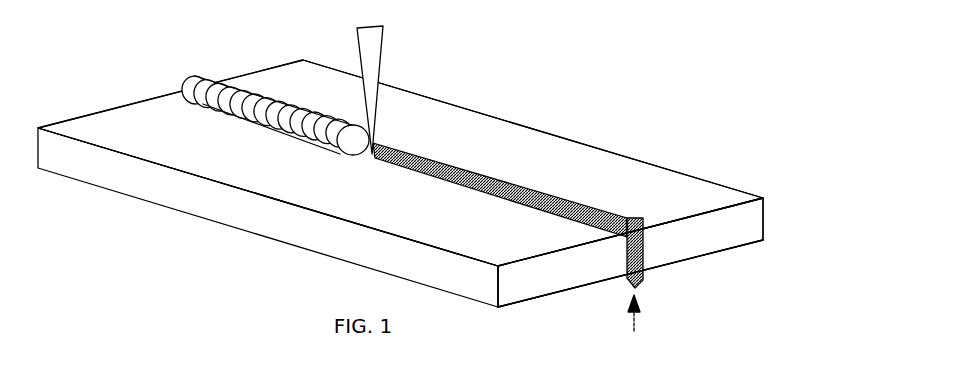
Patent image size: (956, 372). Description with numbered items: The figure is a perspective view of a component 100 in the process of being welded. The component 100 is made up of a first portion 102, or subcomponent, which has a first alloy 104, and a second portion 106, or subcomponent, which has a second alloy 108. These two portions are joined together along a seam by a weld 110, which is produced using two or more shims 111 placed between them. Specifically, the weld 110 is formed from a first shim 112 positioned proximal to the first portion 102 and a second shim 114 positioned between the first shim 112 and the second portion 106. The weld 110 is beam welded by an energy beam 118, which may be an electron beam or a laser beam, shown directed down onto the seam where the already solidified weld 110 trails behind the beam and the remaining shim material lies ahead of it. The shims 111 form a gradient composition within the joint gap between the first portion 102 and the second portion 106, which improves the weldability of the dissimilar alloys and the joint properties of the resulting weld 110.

The component 100 is at (588, 38).
The first portion 102 is at (520, 305).
The first alloy 104 is at (297, 232).
The second portion 106 is at (722, 252).
The second alloy 108 is at (665, 255).
The weld 110 is at (238, 90).
The shims 111 is at (637, 325).
The first shim 112 is at (627, 257).
The second shim 114 is at (576, 195).
The energy beam 118 is at (373, 45).